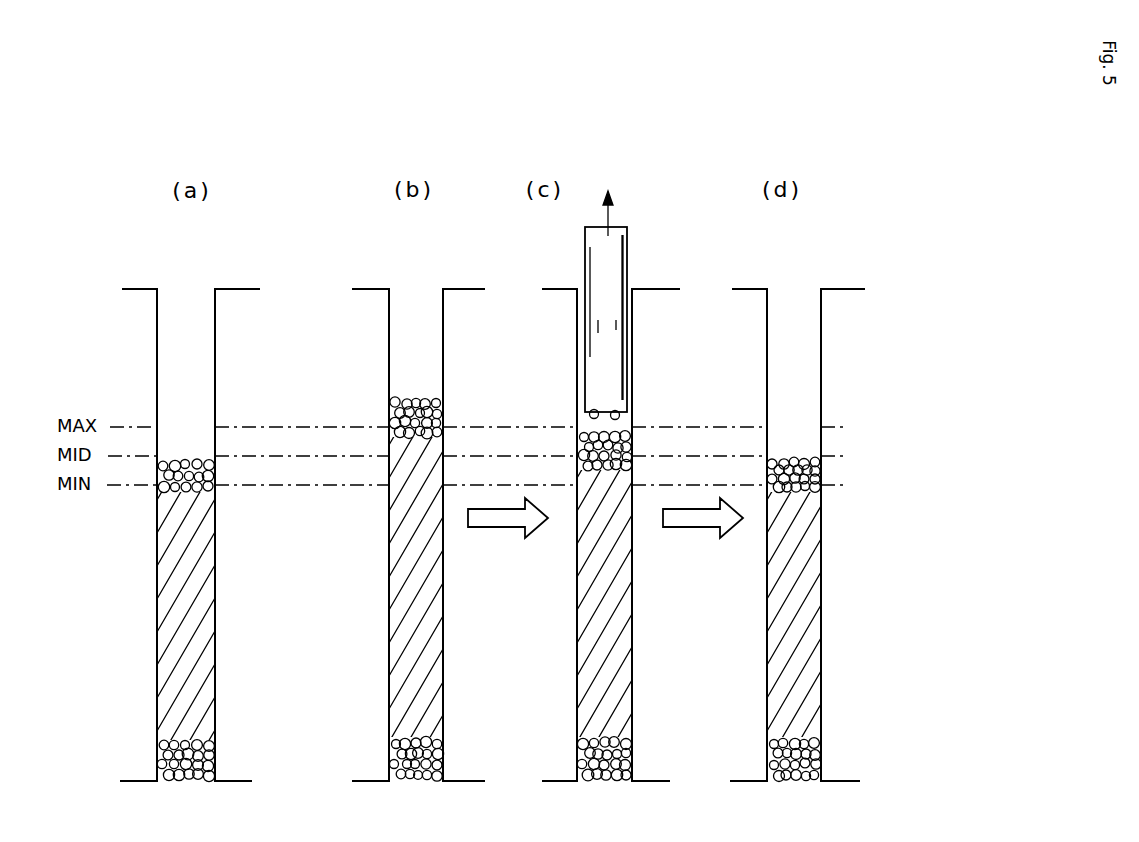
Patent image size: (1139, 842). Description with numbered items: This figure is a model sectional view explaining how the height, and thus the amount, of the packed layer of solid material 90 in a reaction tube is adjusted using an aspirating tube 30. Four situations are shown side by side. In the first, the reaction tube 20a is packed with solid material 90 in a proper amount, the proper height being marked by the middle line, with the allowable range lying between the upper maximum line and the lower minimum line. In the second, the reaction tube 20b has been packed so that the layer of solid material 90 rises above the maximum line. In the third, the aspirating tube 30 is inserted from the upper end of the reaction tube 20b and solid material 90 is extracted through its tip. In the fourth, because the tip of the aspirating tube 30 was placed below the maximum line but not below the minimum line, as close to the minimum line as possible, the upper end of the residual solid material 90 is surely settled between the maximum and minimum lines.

The reaction tube 20a is at (158, 303).
The reaction tube 20b is at (389, 306).
The aspirating tube 30 is at (615, 270).
The solid material 90 is at (167, 500).